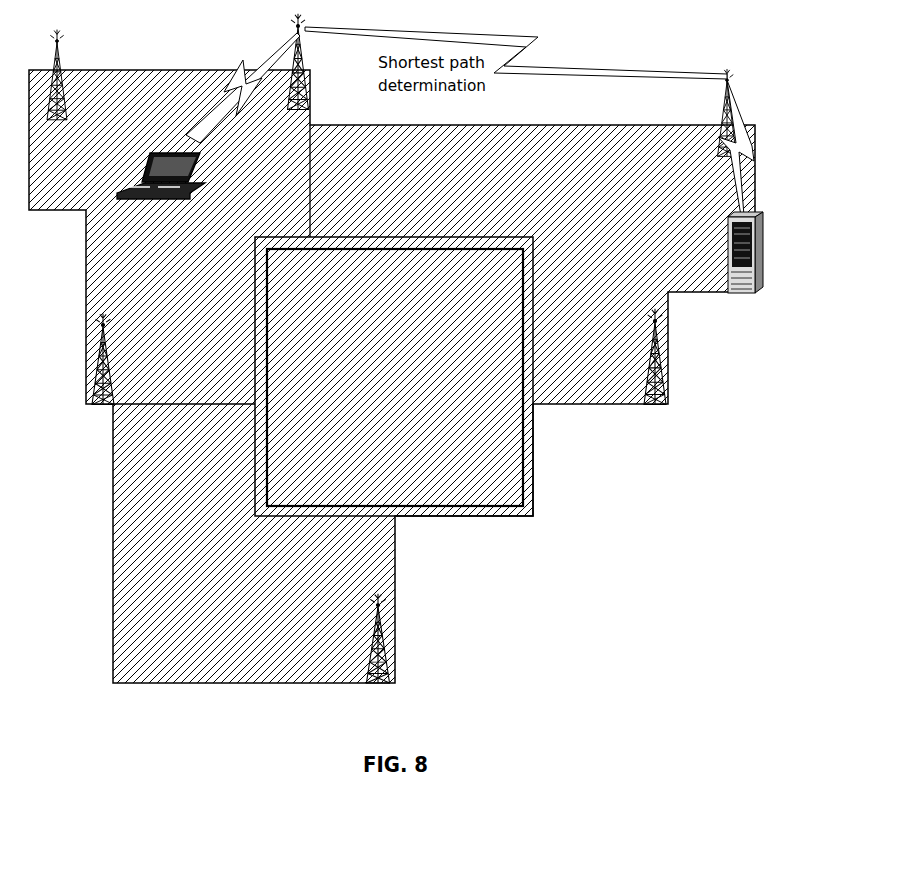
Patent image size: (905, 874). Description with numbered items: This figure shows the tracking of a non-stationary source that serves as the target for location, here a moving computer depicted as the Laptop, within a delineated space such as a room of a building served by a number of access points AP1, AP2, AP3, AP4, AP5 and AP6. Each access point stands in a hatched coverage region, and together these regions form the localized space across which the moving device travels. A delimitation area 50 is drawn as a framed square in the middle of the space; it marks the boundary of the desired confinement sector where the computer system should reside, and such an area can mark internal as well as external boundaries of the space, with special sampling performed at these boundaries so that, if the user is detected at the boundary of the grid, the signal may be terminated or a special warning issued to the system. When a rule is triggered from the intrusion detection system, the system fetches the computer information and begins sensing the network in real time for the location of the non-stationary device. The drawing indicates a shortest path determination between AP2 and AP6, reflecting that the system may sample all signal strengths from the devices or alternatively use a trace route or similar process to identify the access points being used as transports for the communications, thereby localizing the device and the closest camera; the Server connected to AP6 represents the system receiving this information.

The delimitation area 50 is at (531, 511).
The access point AP1 is at (57, 84).
The access point AP2 is at (298, 72).
The access point AP3 is at (102, 368).
The access point AP4 is at (378, 648).
The access point AP5 is at (655, 366).
The access point AP6 is at (725, 126).
The laptop client device Laptop is at (161, 183).
The server Server is at (742, 261).